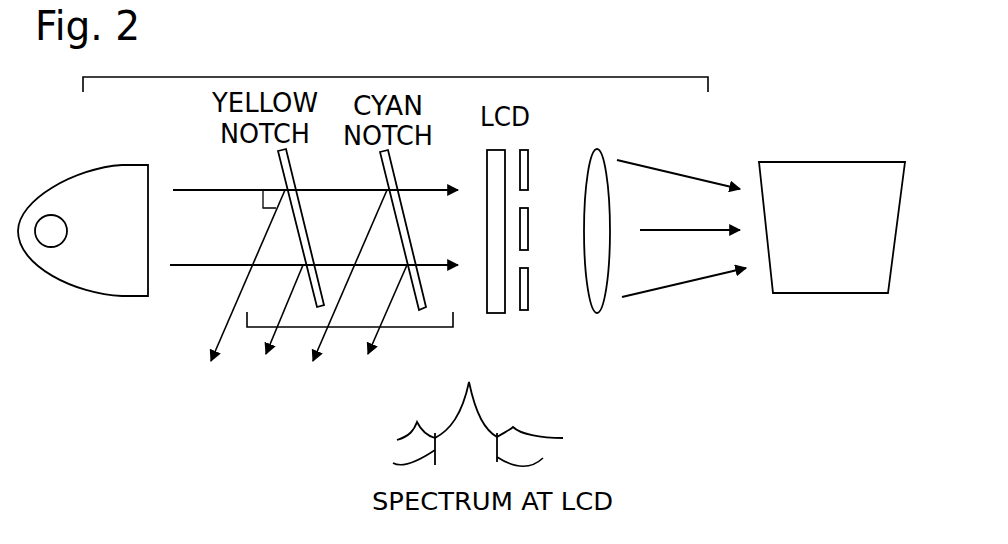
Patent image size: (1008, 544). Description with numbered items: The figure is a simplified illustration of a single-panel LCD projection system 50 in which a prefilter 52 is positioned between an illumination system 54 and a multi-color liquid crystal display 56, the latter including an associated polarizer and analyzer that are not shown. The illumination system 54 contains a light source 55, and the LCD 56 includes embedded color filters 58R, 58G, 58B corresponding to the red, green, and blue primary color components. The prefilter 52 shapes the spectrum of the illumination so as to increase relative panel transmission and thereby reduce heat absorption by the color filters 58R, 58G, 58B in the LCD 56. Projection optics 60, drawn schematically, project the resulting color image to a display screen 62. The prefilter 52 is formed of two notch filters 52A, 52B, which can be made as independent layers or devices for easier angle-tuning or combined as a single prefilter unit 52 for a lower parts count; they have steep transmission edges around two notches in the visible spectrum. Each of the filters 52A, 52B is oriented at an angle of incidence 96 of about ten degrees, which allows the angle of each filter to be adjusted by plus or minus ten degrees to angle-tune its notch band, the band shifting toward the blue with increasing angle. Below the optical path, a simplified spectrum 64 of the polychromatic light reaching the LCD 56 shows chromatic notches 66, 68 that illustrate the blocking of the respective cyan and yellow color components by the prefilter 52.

The single-panel LCD projection system 50 is at (420, 77).
The prefilter 52 is at (344, 284).
The notch filter 52A is at (305, 230).
The notch filter 52B is at (410, 238).
The illumination system 54 is at (117, 310).
The light source 55 is at (45, 246).
The multi-color liquid crystal display 56 is at (501, 328).
The red color filter 58R is at (528, 158).
The green color filter 58G is at (528, 242).
The blue color filter 58B is at (522, 308).
The projection optics 60 is at (598, 308).
The display screen 62 is at (795, 290).
The spectrum 64 is at (448, 406).
The chromatic notch 66 is at (400, 461).
The chromatic notch 68 is at (544, 461).
The angle of incidence 96 is at (287, 212).